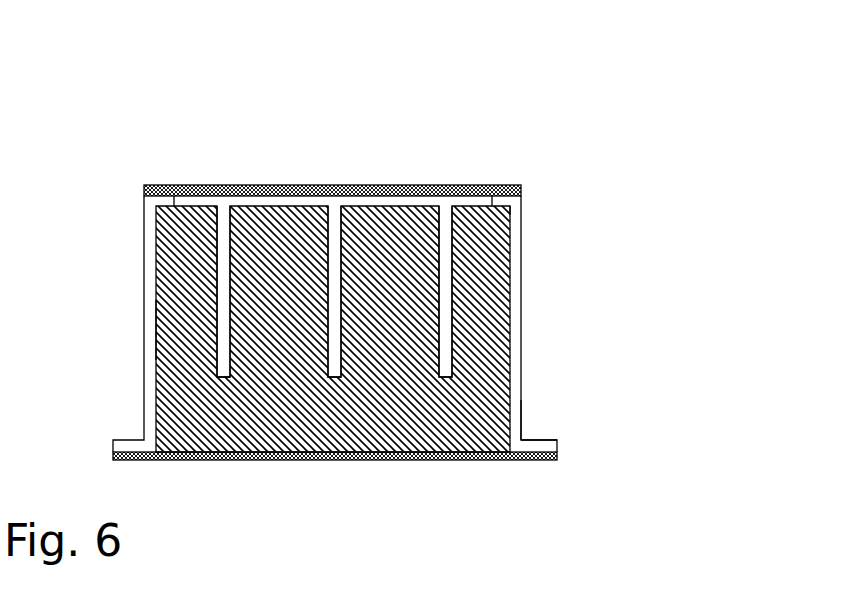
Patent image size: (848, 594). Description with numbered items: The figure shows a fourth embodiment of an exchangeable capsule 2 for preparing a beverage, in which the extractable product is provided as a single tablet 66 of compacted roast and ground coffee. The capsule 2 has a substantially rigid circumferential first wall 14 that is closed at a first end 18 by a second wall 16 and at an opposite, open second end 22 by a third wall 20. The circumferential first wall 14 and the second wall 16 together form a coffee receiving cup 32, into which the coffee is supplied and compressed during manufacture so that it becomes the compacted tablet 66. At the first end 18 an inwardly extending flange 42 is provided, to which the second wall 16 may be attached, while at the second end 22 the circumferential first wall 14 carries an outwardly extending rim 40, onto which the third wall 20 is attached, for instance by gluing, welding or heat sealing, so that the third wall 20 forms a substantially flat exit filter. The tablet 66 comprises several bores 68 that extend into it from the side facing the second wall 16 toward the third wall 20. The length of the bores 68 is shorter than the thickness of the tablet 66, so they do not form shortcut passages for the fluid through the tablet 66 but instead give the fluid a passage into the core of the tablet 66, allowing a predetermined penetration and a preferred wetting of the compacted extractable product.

The capsule 2 is at (718, 459).
The circumferential first wall 14 is at (513, 330).
The second wall 16 is at (465, 187).
The first end 18 is at (520, 213).
The third wall 20 is at (472, 458).
The second end 22 is at (513, 432).
The coffee receiving cup 32 is at (141, 228).
The outwardly extending rim 40 is at (550, 447).
The inwardly extending flange 42 is at (510, 202).
The tablet 66 is at (157, 327).
The bores 68 is at (225, 213).